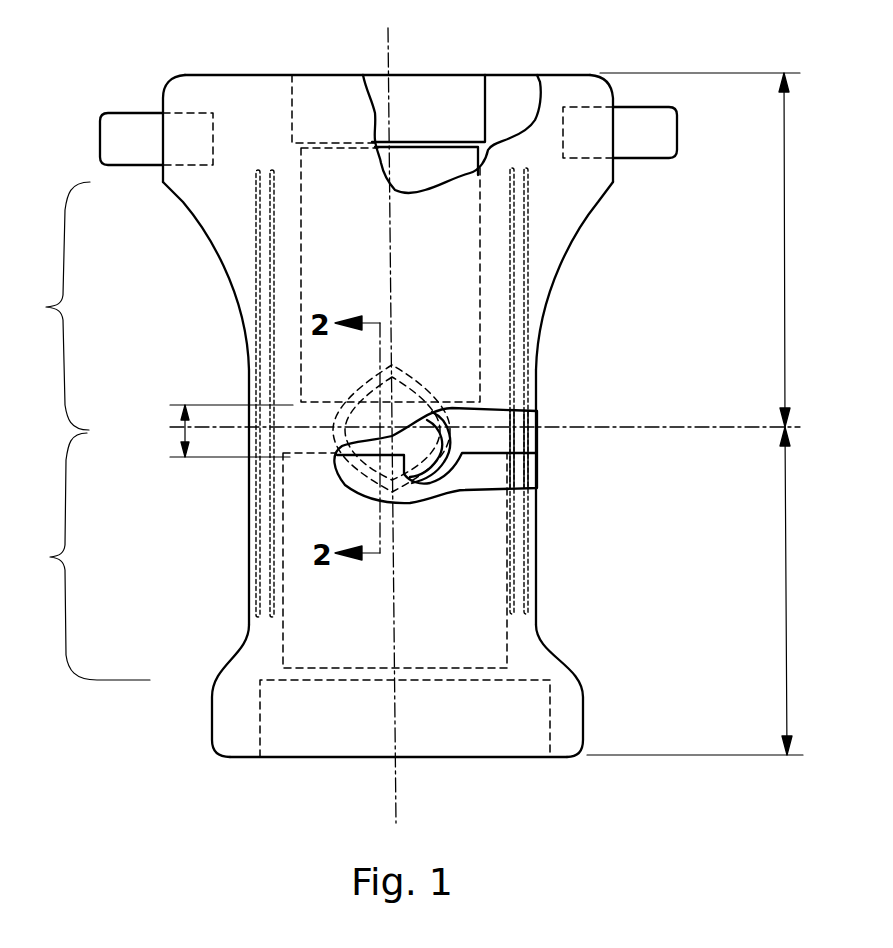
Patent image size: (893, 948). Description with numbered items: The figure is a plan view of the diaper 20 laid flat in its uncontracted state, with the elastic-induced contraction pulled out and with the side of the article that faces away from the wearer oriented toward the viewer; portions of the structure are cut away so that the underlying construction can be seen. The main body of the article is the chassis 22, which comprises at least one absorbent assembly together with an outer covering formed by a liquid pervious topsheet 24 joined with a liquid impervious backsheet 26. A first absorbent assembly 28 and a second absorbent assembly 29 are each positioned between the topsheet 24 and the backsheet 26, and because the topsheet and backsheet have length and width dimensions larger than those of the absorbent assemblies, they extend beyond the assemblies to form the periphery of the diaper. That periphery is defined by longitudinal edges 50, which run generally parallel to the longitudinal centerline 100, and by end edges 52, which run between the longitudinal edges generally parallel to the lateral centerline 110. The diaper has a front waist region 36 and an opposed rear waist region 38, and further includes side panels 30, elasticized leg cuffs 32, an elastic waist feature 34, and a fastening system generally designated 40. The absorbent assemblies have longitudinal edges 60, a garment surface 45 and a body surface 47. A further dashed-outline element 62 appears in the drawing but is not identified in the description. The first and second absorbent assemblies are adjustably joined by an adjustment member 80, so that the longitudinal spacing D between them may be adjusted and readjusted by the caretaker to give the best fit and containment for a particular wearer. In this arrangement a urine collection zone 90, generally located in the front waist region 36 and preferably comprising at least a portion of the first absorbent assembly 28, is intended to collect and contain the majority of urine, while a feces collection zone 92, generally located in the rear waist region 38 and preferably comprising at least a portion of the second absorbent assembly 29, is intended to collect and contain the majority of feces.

The diaper 20 is at (614, 308).
The chassis 22 is at (313, 587).
The topsheet 24 is at (452, 134).
The backsheet 26 is at (390, 275).
The first absorbent assembly 28 is at (317, 617).
The second absorbent assembly 29 is at (426, 164).
The side panels 30 is at (228, 227).
The elasticized leg cuffs 32 is at (257, 494).
The elastic waist feature 34 is at (428, 108).
The front waist region 36 is at (787, 582).
The rear waist region 38 is at (785, 245).
The fastening system 40 is at (122, 123).
The garment surface 45 is at (461, 157).
The body surface 47 is at (313, 292).
The longitudinal edges 50 is at (248, 377).
The end edges 52 is at (277, 75).
The longitudinal edges of the absorbent assemblies 60 is at (300, 187).
The waist feature 62 is at (357, 143).
The adjustment member 80 is at (440, 435).
The urine collection zone 90 is at (80, 556).
The feces collection zone 92 is at (48, 306).
The longitudinal centerline 100 is at (391, 37).
The lateral centerline 110 is at (562, 427).
The spacing D is at (180, 432).